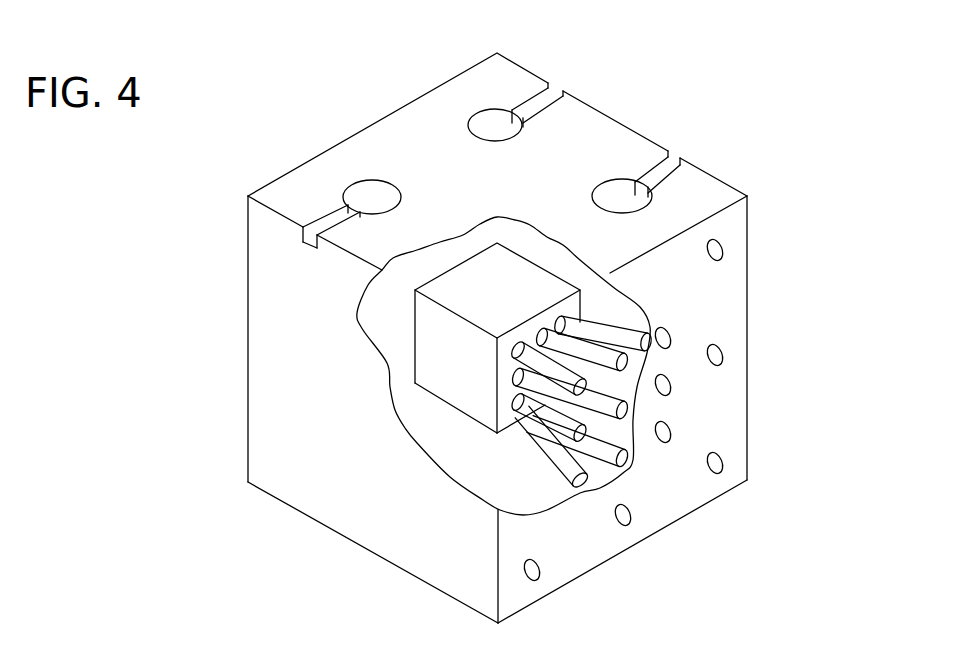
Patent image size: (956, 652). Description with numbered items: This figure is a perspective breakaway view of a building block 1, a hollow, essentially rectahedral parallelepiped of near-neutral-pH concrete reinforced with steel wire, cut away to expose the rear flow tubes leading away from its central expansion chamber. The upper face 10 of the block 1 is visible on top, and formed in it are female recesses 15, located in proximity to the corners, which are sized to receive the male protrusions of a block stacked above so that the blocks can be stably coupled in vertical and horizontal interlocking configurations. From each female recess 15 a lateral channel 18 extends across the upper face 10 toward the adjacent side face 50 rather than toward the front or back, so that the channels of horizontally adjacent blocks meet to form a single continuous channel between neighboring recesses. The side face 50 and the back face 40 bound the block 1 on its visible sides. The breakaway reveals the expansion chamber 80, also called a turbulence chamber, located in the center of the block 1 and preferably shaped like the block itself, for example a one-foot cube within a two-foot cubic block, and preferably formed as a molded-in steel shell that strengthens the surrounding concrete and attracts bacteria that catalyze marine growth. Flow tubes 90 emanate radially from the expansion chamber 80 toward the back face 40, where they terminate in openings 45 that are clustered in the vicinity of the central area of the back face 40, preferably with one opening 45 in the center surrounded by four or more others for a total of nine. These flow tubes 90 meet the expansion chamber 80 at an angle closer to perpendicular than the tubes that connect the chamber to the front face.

The block 1 is at (748, 103).
The upper face 10 is at (296, 190).
The female recess 15 is at (499, 123).
The lateral channel 18 is at (545, 95).
The back face 40 is at (733, 427).
The opening 45 is at (722, 253).
The side face 50 is at (282, 436).
The expansion chamber 80 is at (435, 338).
The flow tube 90 is at (550, 457).